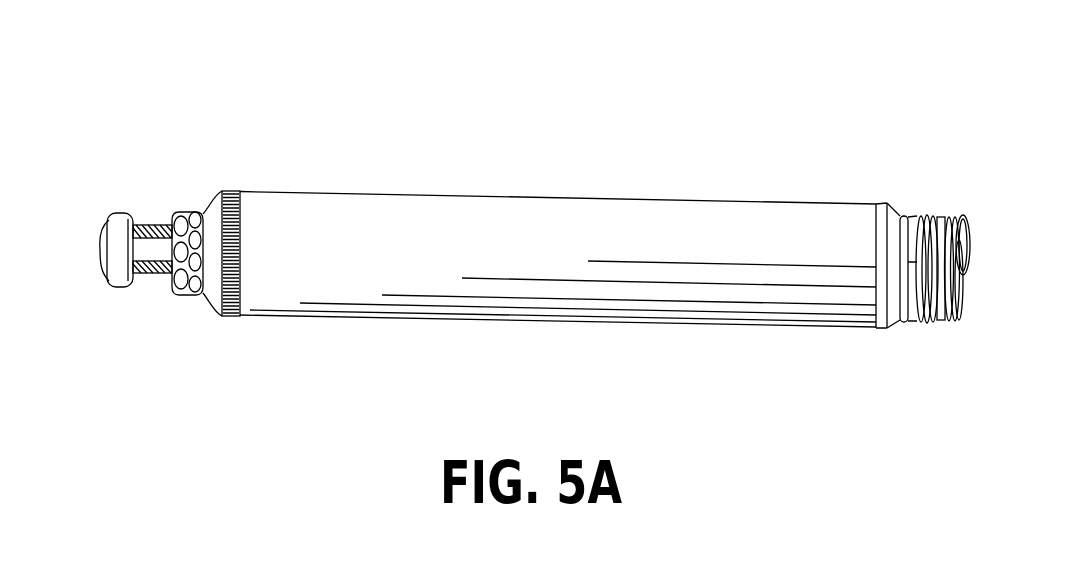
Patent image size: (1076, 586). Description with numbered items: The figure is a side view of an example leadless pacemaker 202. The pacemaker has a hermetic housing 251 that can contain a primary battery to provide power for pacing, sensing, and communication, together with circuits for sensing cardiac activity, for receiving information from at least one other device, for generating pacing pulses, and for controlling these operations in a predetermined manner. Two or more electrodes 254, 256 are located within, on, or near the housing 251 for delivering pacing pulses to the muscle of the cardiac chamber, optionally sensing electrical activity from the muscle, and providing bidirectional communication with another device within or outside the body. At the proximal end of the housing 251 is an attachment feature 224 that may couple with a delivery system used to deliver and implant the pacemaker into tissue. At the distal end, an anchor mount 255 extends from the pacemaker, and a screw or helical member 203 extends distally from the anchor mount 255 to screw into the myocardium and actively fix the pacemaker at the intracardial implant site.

The leadless pacemaker 202 is at (175, 61).
The attachment feature 224 is at (116, 212).
The electrode 256 is at (229, 191).
The hermetic housing 251 is at (393, 203).
The anchor mount 255 is at (912, 322).
The electrode 254 is at (968, 271).
The helical member 203 is at (973, 262).